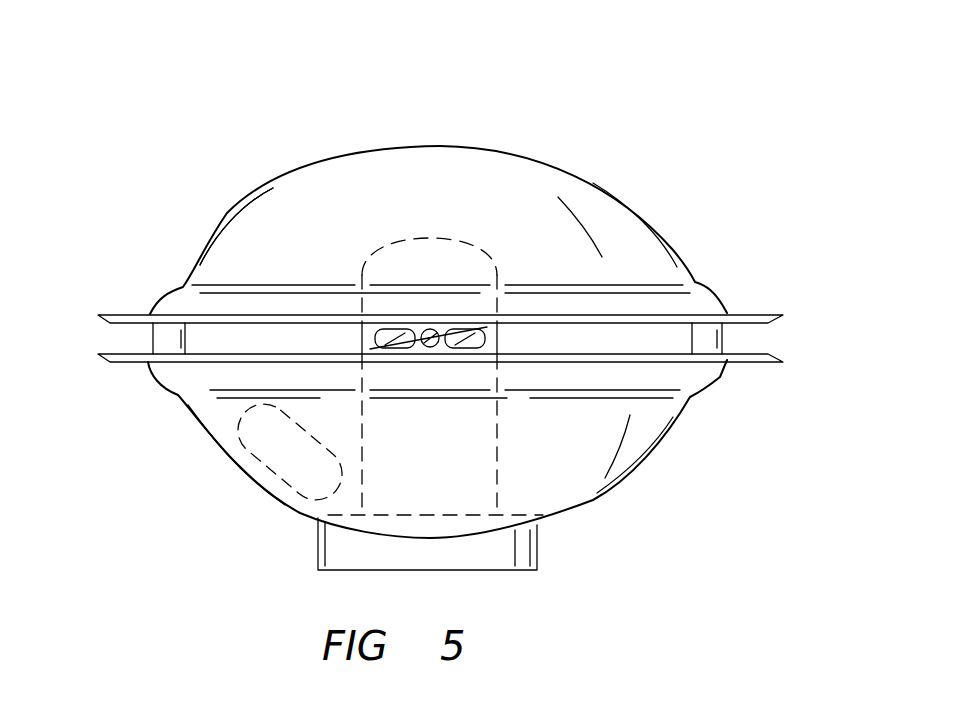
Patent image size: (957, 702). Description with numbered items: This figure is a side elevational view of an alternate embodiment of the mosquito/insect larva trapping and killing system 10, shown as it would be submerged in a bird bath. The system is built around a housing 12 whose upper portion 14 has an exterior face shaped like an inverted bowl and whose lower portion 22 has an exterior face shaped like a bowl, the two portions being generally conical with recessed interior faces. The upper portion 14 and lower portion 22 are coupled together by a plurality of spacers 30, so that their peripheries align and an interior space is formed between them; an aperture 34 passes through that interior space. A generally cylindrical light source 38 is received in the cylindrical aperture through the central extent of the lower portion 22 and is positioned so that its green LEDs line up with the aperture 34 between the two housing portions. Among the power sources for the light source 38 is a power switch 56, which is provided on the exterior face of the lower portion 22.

The mosquito/insect larva trapping and killing system 10 is at (409, 301).
The housing 12 is at (677, 287).
The upper portion 14 is at (263, 255).
The lower portion 22 is at (628, 443).
The spacers 30 is at (152, 357).
The aperture 34 is at (120, 332).
The light source 38 is at (503, 485).
The power switch 56 is at (288, 482).